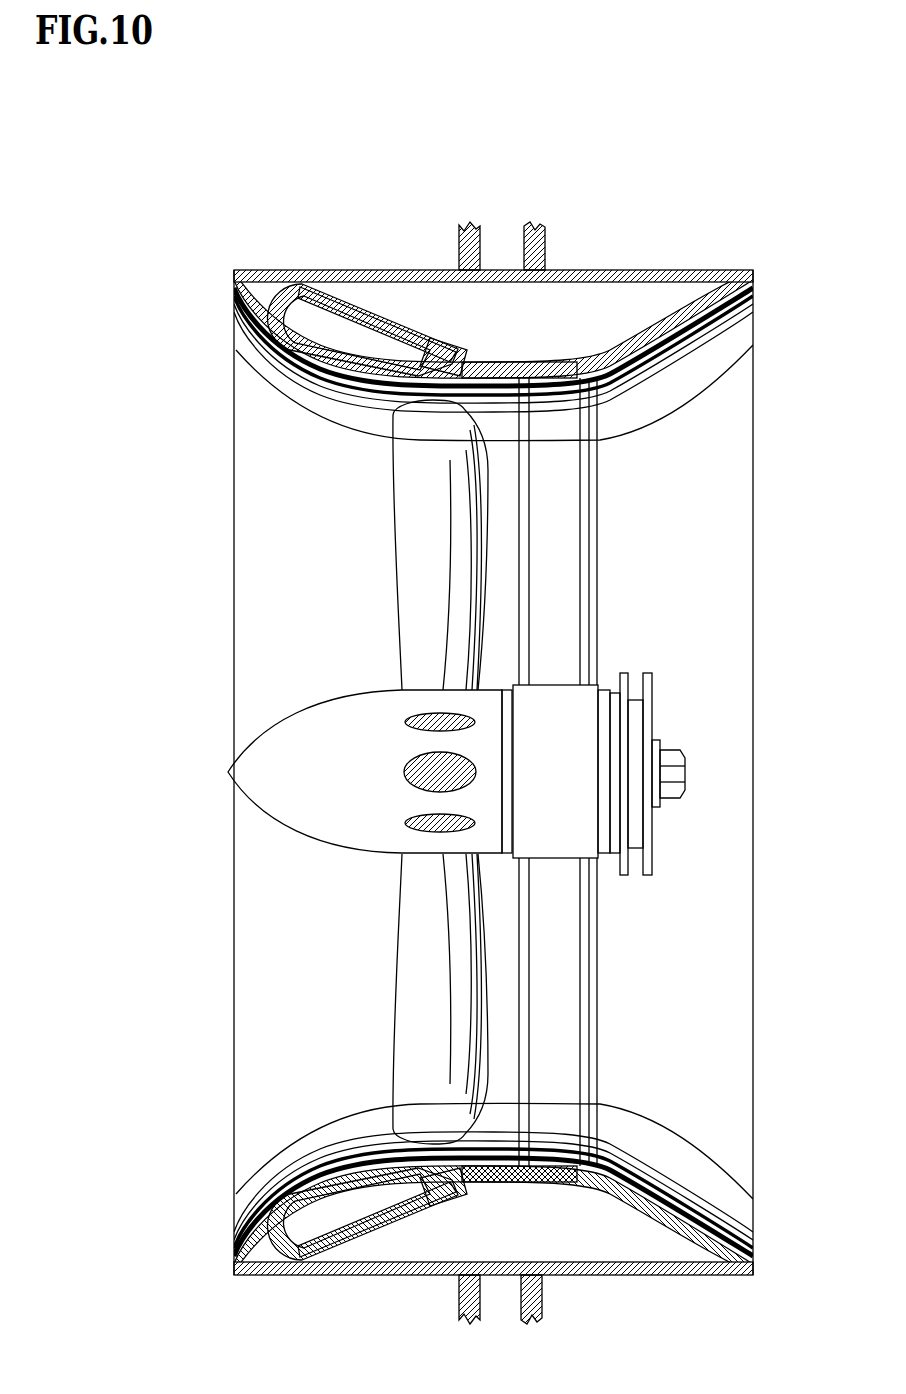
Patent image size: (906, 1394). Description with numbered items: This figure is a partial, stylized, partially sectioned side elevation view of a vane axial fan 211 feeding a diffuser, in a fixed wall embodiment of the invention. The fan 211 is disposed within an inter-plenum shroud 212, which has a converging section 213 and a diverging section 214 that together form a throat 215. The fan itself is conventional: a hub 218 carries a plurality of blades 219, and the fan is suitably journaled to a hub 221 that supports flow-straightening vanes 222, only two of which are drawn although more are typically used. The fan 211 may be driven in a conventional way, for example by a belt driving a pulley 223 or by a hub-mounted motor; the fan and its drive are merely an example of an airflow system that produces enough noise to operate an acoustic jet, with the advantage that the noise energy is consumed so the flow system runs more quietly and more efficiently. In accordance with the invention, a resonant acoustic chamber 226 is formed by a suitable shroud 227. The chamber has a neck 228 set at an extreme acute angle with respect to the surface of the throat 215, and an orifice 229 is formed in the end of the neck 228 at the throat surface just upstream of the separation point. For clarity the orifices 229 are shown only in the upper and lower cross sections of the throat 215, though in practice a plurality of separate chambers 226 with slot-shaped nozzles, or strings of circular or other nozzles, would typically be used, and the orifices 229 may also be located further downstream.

The vane axial fan 211 is at (328, 772).
The inter-plenum shroud 212 is at (475, 373).
The converging section 213 is at (320, 373).
The diverging section 214 is at (688, 323).
The throat 215 is at (553, 380).
The hub 218 is at (252, 757).
The blades 219 is at (408, 768).
The hub 221 is at (579, 776).
The flow-straightening vanes 222 is at (566, 518).
The pulley 223 is at (651, 705).
The resonant acoustic chamber 226 is at (361, 336).
The shroud 227 is at (383, 1233).
The neck 228 is at (462, 1190).
The orifice 229 is at (477, 366).